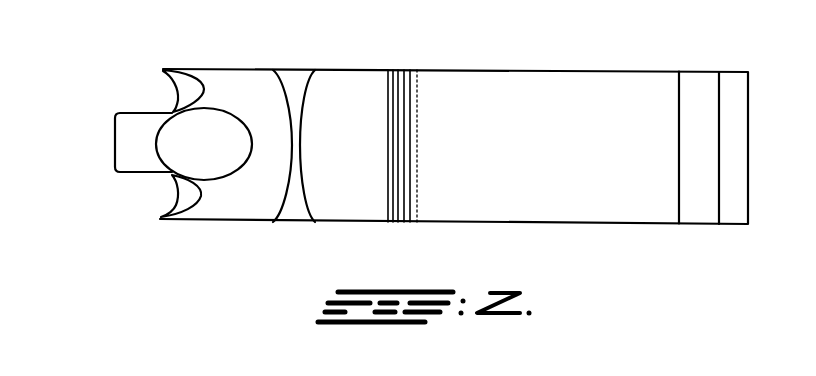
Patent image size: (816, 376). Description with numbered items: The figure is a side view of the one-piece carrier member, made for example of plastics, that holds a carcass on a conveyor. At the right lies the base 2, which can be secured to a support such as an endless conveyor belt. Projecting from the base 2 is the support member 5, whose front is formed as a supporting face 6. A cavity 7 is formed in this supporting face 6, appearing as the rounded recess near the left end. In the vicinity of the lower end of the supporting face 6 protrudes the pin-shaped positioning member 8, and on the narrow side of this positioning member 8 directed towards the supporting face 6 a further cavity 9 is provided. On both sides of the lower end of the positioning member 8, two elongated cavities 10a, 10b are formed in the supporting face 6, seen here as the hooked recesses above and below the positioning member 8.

The base 2 is at (536, 86).
The support member 5 is at (321, 140).
The supporting face 6 is at (258, 206).
The cavity 7 is at (230, 155).
The pin-shaped positioning member 8 is at (138, 125).
The cavity 9 is at (172, 150).
The elongated cavity 10a is at (185, 91).
The elongated cavity 10b is at (178, 205).